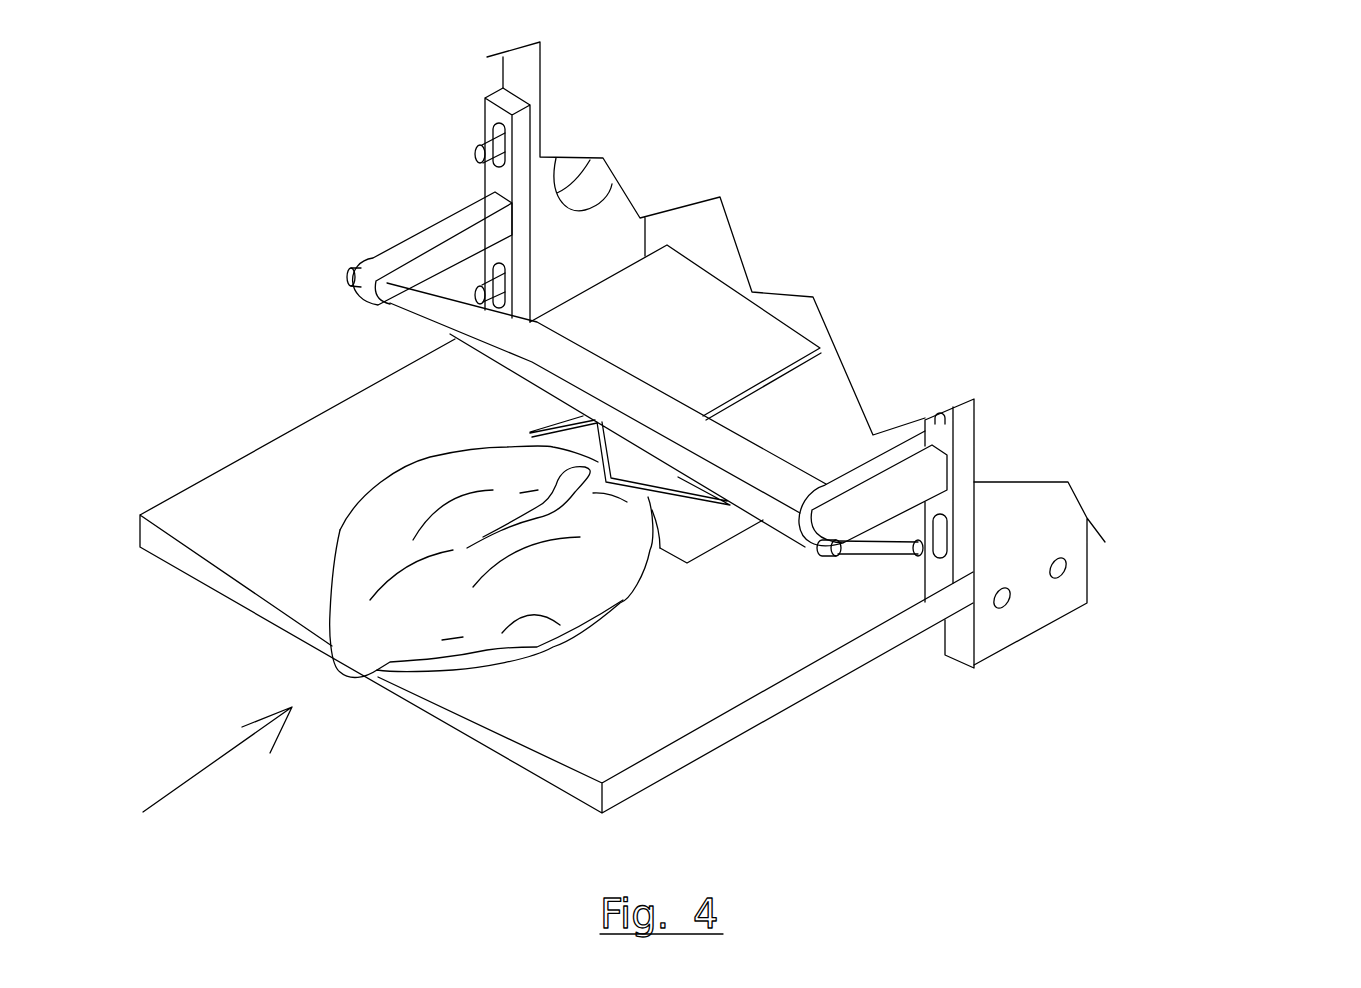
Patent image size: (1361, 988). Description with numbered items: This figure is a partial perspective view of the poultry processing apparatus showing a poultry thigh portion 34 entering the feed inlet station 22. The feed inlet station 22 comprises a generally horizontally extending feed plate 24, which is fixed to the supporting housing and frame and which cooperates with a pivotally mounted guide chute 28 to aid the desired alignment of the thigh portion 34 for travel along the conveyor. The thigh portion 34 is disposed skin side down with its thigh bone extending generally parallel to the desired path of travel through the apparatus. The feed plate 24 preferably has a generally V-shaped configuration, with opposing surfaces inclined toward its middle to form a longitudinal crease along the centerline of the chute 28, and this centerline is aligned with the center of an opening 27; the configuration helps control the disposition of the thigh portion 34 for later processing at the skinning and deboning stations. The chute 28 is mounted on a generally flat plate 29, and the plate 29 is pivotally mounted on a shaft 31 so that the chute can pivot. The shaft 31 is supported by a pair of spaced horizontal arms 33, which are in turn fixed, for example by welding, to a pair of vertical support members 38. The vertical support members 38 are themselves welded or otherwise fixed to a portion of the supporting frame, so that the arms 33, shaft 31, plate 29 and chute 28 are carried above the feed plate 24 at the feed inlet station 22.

The feed inlet station 22 is at (1123, 580).
The feed plate 24 is at (682, 718).
The opening 27 is at (683, 538).
The guide chute 28 is at (749, 508).
The flat plate 29 is at (415, 318).
The shaft 31 is at (350, 274).
The horizontal arms 33 is at (420, 225).
The thigh portion 34 is at (533, 593).
The vertical support members 38 is at (963, 438).